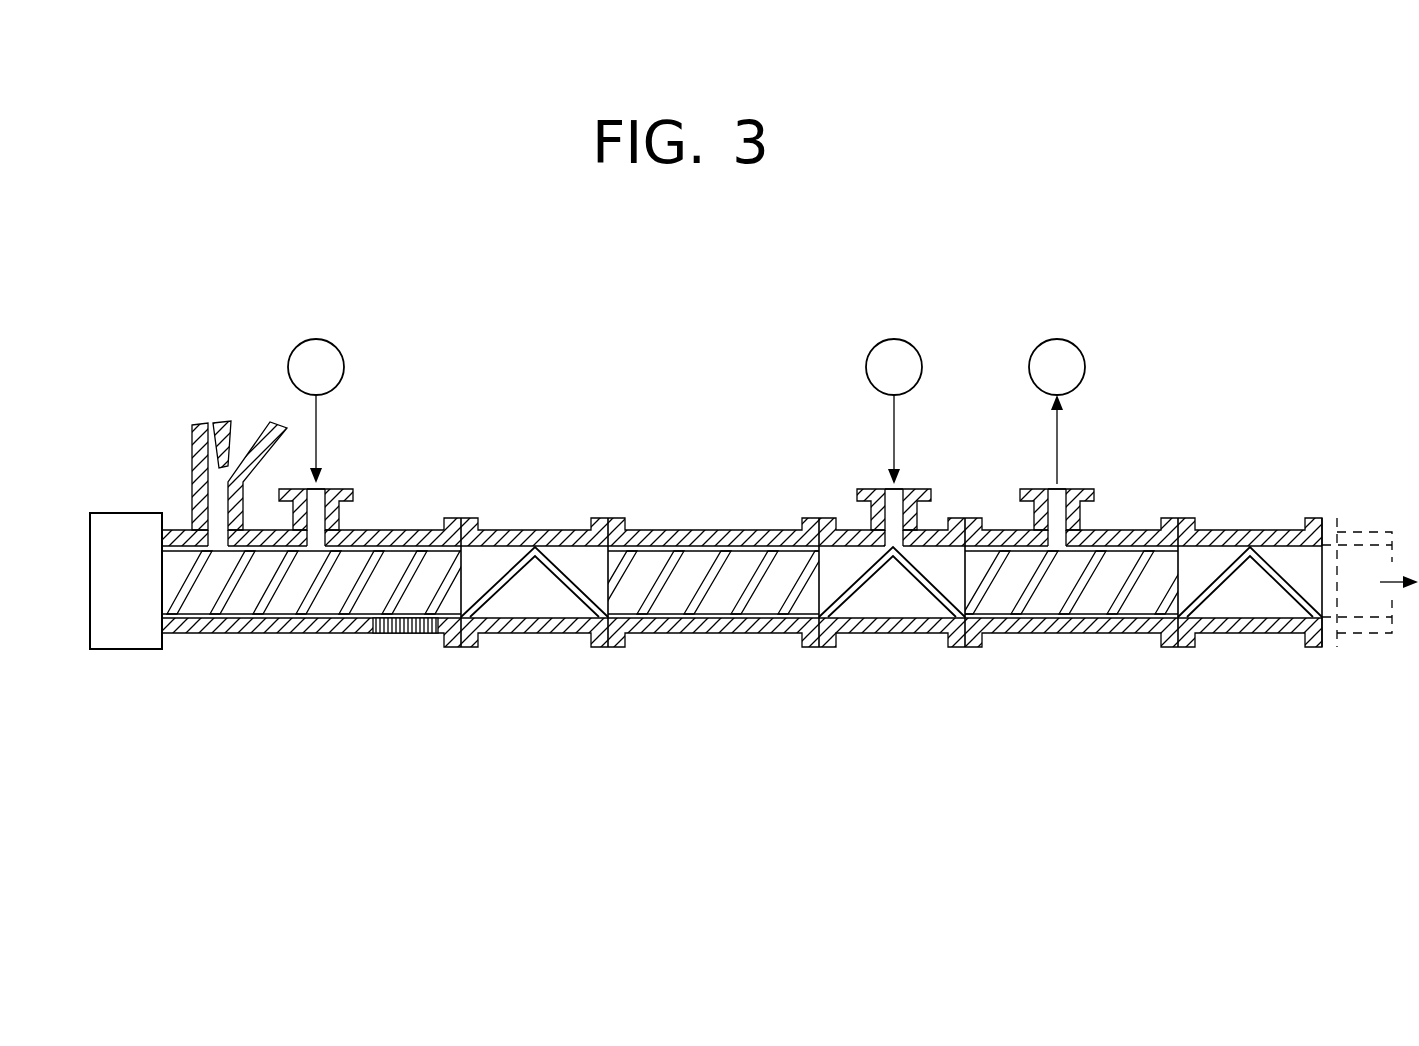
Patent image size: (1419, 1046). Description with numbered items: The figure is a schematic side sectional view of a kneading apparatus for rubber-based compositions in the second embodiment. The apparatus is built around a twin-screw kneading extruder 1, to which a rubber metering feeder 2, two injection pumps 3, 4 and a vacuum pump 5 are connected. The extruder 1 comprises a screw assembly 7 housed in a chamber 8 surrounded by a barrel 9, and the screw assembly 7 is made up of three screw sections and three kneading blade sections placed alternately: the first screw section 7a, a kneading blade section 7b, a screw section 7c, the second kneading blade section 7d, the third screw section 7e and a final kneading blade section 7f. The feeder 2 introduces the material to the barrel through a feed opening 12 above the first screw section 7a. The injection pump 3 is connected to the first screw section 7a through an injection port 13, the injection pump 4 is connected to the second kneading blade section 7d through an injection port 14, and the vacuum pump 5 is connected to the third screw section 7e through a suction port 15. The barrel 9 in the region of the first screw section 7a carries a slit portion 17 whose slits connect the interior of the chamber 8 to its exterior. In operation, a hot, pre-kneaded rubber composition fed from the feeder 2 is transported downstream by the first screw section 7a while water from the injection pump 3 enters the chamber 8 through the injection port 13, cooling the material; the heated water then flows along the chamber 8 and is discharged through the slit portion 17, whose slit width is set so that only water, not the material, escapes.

The twin-screw kneading extruder 1 is at (135, 660).
The rubber metering feeder 2 is at (232, 408).
The injection pump 3 is at (334, 336).
The injection pump 4 is at (911, 336).
The vacuum pump 5 is at (1076, 336).
The screw assembly 7 is at (224, 612).
The first screw section 7a is at (318, 603).
The kneading blade section 7b is at (515, 605).
The screw section 7c is at (733, 597).
The second kneading blade section 7d is at (892, 602).
The third screw section 7e is at (1037, 603).
The kneading blade section 7f is at (1250, 602).
The chamber 8 is at (396, 535).
The barrel 9 is at (510, 540).
The feed opening 12 is at (218, 524).
The injection port 13 is at (332, 488).
The injection port 14 is at (917, 489).
The suction port 15 is at (1080, 489).
The slit portion 17 is at (397, 650).